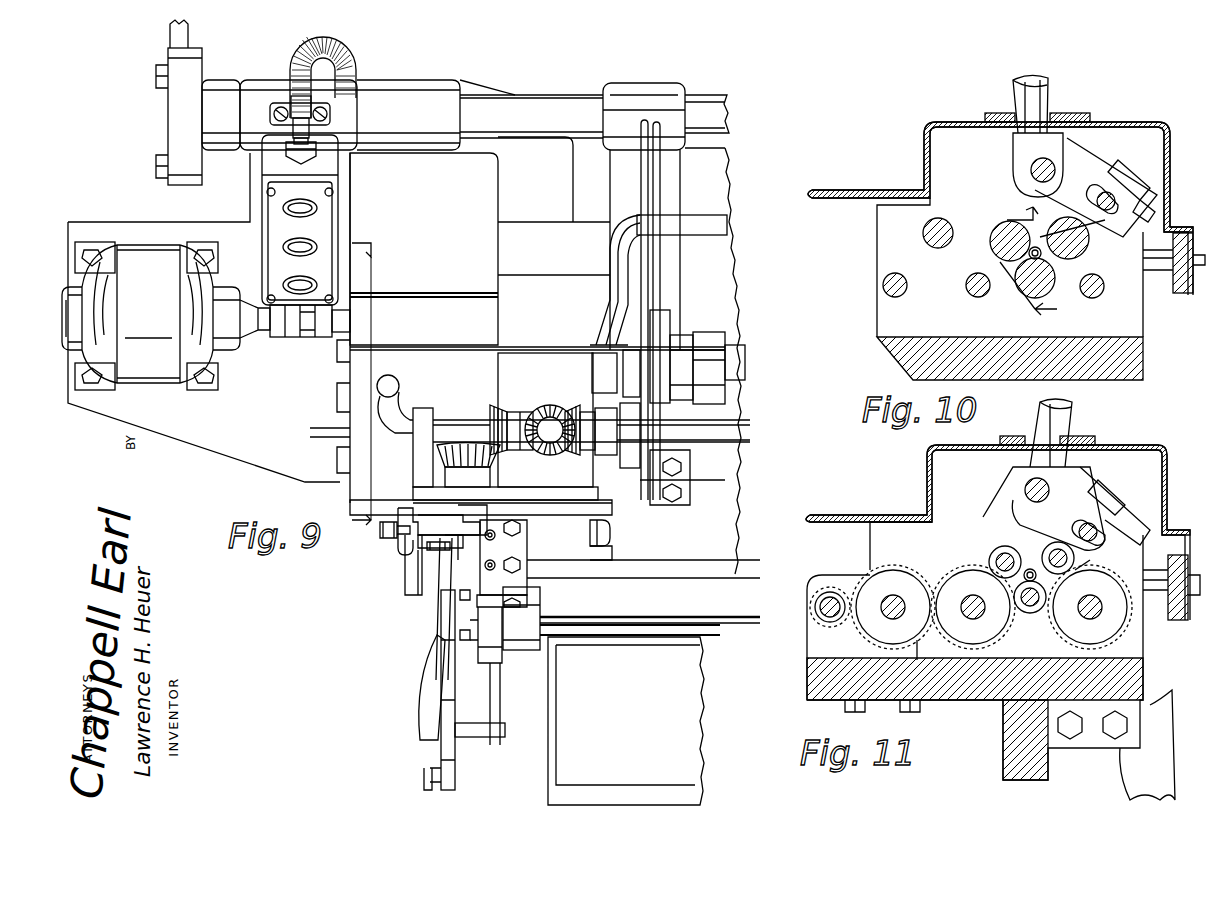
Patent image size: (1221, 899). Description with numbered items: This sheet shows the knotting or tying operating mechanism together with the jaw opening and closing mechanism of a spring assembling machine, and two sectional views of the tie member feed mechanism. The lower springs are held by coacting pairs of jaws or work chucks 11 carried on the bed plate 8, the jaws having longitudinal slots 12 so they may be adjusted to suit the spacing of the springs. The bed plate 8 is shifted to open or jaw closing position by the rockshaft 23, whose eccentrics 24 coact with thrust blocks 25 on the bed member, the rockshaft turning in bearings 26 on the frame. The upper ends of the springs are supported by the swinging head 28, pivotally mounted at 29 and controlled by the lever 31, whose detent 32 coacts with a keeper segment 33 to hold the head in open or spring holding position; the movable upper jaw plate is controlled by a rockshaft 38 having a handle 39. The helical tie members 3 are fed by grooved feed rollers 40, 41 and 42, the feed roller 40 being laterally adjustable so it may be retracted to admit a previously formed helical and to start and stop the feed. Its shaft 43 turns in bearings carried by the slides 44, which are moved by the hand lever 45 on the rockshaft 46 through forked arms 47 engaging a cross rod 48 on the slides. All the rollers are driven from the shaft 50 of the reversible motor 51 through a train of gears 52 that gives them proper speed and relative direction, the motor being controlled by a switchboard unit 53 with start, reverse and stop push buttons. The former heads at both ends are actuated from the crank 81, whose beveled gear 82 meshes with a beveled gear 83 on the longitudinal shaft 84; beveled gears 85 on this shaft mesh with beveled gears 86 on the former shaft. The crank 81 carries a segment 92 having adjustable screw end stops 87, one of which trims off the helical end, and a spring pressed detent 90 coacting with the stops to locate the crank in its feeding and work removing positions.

In FIG. 10, the helical tie member 3 is at (1042, 260).
In FIG. 11, the helical tie member 3 is at (1040, 582).
In FIG. 9, the bed plate 8 is at (620, 570).
In FIG. 9, the jaws or work chucks 11 is at (352, 380).
In FIG. 10, the longitudinal slots 12 is at (1052, 266).
In FIG. 9, the rockshaft 23 is at (640, 640).
In FIG. 9, the eccentrics 24 is at (726, 372).
In FIG. 9, the thrust blocks 25 is at (718, 345).
In FIG. 9, the bearings 26 is at (530, 640).
In FIG. 9, the swinging head 28 is at (682, 305).
In FIG. 9, the pivot 29 is at (628, 95).
In FIG. 9, the lever 31 is at (436, 632).
In FIG. 11, the lever 31 is at (1160, 752).
In FIG. 9, the detent 32 is at (422, 693).
In FIG. 9, the keeper segment 33 is at (440, 755).
In FIG. 9, the rockshaft 38 is at (745, 378).
In FIG. 9, the handle 39 is at (702, 236).
In FIG. 10, the feed roller 40 is at (1089, 245).
In FIG. 11, the feed roller 40 is at (1080, 560).
In FIG. 10, the feed roller 41 is at (990, 248).
In FIG. 11, the feed roller 41 is at (992, 555).
In FIG. 10, the feed roller 42 is at (1025, 297).
In FIG. 11, the feed roller 42 is at (1030, 615).
In FIG. 11, the shaft 43 is at (1045, 548).
In FIG. 10, the slides 44 is at (1132, 175).
In FIG. 11, the slides 44 is at (1135, 520).
In FIG. 9, the hand lever 45 is at (396, 388).
In FIG. 10, the hand lever 45 is at (1050, 86).
In FIG. 11, the hand lever 45 is at (1075, 412).
In FIG. 10, the rockshaft 46 is at (1032, 172).
In FIG. 11, the rockshaft 46 is at (1050, 490).
In FIG. 10, the forked arms 47 is at (1140, 196).
In FIG. 11, the forked arms 47 is at (1110, 495).
In FIG. 10, the cross rod 48 is at (1128, 214).
In FIG. 11, the cross rod 48 is at (1115, 520).
In FIG. 9, the motor shaft 50 is at (272, 325).
In FIG. 11, the motor shaft 50 is at (830, 592).
In FIG. 9, the reversible motor 51 is at (150, 380).
In FIG. 11, the train of gears 52 is at (918, 590).
In FIG. 9, the switchboard unit 53 is at (330, 210).
In FIG. 9, the crank 81 is at (440, 530).
In FIG. 9, the beveled gear 82 is at (464, 443).
In FIG. 9, the beveled gear 83 is at (494, 410).
In FIG. 9, the shaft 84 is at (717, 442).
In FIG. 9, the beveled gears 85 is at (575, 406).
In FIG. 9, the beveled gears 86 is at (547, 406).
In FIG. 9, the adjustable end stops 87 is at (378, 530).
In FIG. 9, the spring pressed detent 90 is at (430, 552).
In FIG. 9, the segment 92 is at (538, 512).